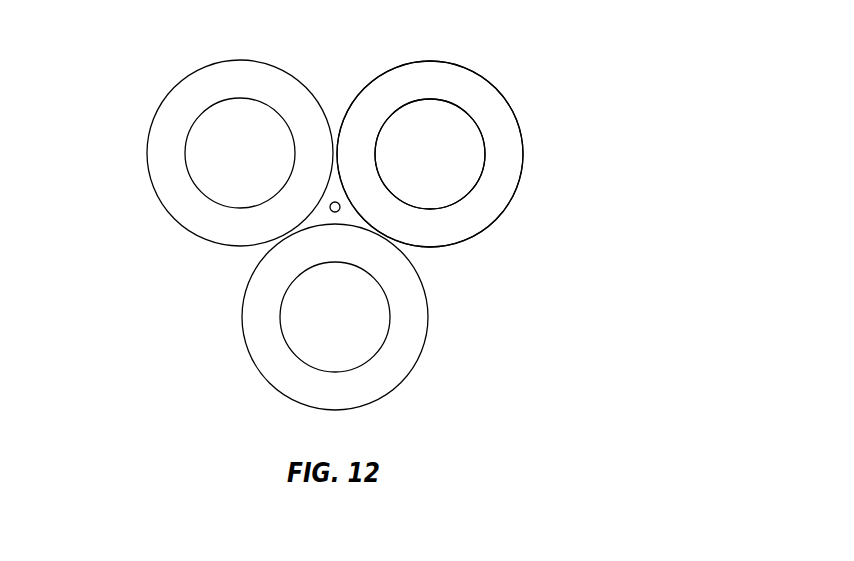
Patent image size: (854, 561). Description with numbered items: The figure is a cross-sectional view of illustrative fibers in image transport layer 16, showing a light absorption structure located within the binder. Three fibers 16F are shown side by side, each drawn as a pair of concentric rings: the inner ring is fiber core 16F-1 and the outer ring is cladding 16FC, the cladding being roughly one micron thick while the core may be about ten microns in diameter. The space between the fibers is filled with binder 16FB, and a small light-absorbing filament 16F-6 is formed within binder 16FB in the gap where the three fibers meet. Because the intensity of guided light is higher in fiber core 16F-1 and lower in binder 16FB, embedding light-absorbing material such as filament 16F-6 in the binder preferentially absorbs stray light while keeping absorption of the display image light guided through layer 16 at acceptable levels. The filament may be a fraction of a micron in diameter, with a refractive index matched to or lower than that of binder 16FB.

The image transport layer 16 is at (641, 190).
The fiber 16F is at (147, 155).
The cladding 16FC is at (486, 99).
The fiber core 16F-1 is at (427, 112).
The binder 16FB is at (333, 193).
The light-absorbing filament 16F-6 is at (335, 212).